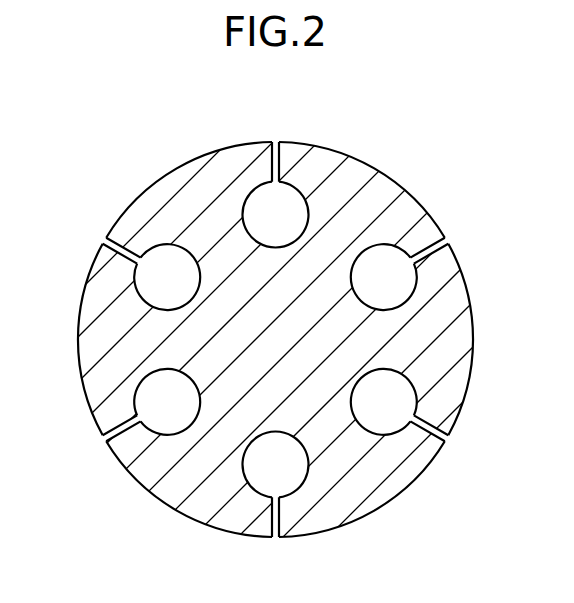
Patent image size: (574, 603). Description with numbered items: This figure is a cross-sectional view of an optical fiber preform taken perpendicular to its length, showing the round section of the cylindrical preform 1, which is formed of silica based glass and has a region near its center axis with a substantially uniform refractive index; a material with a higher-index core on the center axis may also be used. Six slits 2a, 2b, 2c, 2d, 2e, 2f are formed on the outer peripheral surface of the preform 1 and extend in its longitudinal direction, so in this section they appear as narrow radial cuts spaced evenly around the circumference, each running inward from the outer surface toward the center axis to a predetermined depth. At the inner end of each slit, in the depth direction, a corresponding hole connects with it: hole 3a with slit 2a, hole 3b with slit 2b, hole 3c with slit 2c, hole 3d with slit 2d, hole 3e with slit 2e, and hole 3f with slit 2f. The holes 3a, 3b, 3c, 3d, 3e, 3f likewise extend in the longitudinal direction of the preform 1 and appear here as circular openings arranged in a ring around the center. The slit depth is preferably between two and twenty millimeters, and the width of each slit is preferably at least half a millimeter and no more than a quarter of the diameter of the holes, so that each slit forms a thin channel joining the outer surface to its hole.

The preform 1 is at (390, 193).
The slit 2a is at (271, 165).
The hole 3a is at (247, 207).
The slit 2b is at (436, 237).
The hole 3b is at (407, 283).
The slit 2c is at (437, 443).
The hole 3c is at (407, 392).
The slit 2d is at (282, 518).
The hole 3d is at (255, 478).
The slit 2e is at (117, 447).
The hole 3e is at (142, 397).
The slit 2f is at (118, 238).
The hole 3f is at (143, 283).